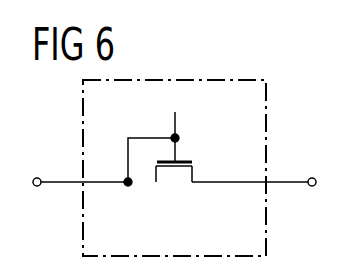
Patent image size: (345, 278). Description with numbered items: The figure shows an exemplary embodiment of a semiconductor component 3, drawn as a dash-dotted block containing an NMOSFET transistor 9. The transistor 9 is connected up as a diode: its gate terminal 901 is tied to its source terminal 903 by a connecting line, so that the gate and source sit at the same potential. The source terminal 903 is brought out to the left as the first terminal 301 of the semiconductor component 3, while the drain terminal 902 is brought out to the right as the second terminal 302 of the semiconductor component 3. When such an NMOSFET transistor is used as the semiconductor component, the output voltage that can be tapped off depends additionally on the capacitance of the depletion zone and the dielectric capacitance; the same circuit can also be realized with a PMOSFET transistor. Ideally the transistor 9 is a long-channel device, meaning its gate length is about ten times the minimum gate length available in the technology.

The semiconductor component 3 is at (207, 80).
The first terminal 301 is at (62, 181).
The second terminal 302 is at (285, 181).
The NMOSFET transistor 9 is at (176, 168).
The gate terminal 901 is at (177, 125).
The source terminal 903 is at (146, 183).
The drain terminal 902 is at (214, 182).